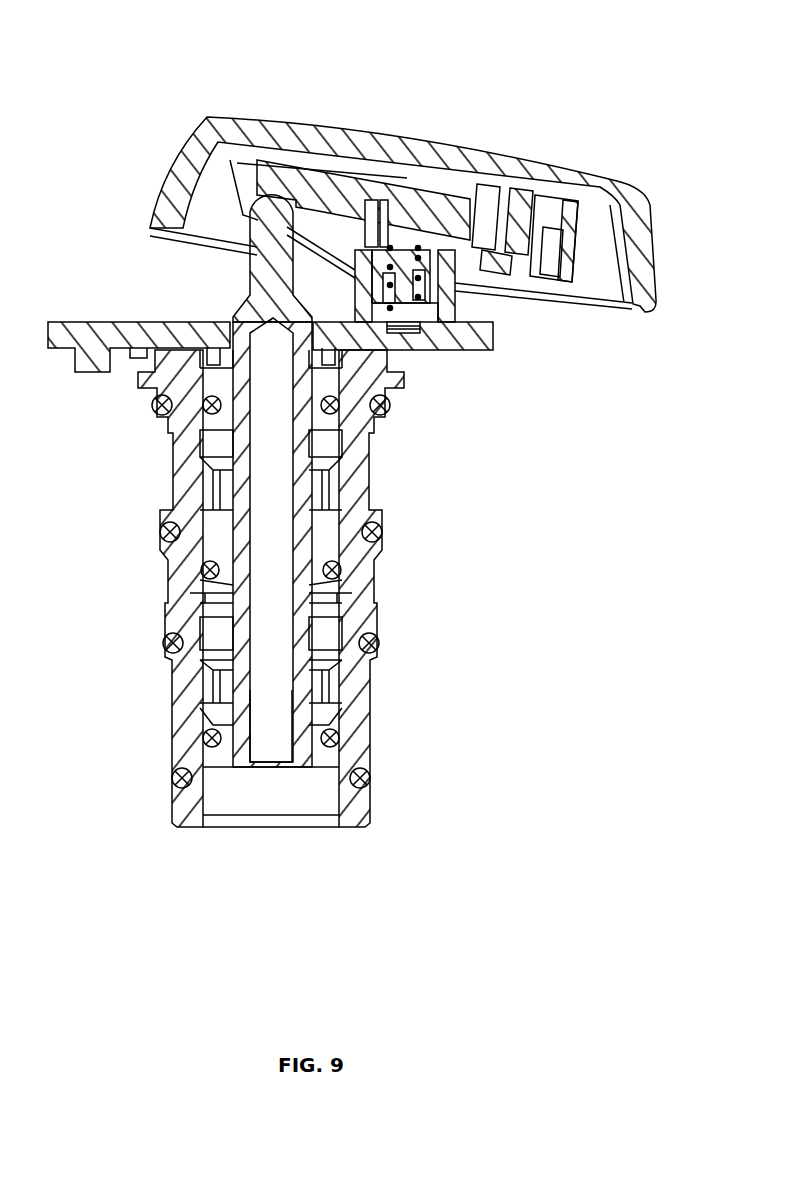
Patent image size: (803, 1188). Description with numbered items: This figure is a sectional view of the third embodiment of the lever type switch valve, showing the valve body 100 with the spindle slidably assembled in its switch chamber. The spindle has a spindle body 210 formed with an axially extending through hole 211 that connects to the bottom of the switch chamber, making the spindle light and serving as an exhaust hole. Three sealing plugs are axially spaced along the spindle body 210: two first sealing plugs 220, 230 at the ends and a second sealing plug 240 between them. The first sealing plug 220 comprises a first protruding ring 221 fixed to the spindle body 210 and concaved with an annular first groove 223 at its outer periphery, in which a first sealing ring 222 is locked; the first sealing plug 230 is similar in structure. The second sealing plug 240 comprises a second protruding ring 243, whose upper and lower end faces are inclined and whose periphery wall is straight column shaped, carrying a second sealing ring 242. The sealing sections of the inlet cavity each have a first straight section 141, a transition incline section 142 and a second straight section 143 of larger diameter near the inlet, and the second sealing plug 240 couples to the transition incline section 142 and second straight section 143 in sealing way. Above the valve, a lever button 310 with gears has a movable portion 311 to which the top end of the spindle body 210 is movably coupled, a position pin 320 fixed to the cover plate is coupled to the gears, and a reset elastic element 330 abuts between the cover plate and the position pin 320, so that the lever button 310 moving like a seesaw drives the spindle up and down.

The valve body 100 is at (365, 623).
The spindle body 210 is at (298, 502).
The through hole 211 is at (312, 702).
The first sealing plug 220 is at (328, 378).
The first protruding ring 221 is at (200, 422).
The first sealing ring 222 is at (342, 402).
The first groove 223 is at (157, 395).
The first sealing plug 230 is at (200, 730).
The second sealing plug 240 is at (230, 537).
The second sealing ring 242 is at (215, 575).
The second protruding ring 243 is at (215, 595).
The first straight section 141 is at (342, 557).
The transition incline section 142 is at (347, 572).
The second straight section 143 is at (348, 577).
The lever button 310 is at (487, 177).
The movable portion 311 is at (317, 160).
The position pin 320 is at (427, 260).
The reset elastic element 330 is at (427, 293).